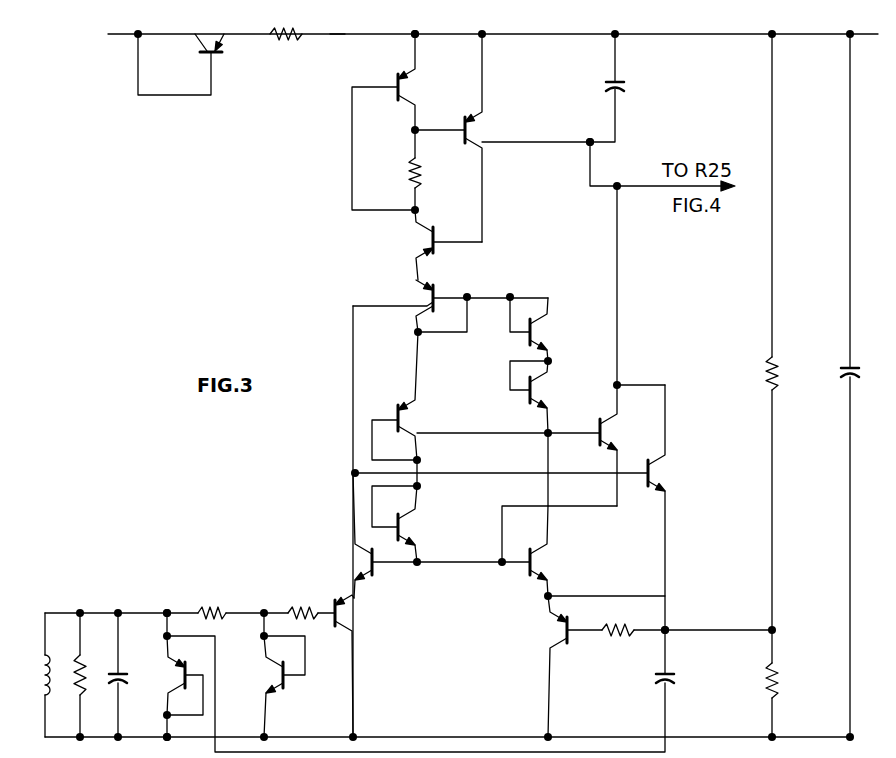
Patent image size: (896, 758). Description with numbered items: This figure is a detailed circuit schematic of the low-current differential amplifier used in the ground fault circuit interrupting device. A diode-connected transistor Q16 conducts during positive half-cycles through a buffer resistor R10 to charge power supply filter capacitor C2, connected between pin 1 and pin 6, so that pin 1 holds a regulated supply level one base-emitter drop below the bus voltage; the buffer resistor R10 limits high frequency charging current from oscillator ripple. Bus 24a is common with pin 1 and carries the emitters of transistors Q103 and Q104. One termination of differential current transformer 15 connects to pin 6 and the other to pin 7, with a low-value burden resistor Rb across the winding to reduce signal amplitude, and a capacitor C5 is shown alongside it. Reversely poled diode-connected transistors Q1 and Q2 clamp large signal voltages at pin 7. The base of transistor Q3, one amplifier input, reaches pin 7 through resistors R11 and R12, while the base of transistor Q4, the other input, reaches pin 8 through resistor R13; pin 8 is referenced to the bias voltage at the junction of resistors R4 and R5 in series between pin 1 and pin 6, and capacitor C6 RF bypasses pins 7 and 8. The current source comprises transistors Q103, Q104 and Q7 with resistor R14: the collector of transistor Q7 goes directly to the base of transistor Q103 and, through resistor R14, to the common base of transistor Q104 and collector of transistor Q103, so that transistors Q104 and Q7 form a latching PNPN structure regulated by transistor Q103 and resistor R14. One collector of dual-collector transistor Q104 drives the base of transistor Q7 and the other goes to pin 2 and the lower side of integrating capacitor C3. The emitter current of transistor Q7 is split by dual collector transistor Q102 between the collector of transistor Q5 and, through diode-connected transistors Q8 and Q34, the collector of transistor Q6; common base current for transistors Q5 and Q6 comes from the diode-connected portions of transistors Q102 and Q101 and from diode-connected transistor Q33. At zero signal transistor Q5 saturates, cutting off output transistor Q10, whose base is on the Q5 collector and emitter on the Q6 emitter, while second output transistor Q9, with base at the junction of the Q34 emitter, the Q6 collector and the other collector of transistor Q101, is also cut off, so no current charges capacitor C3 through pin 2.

The bus 24a is at (335, 34).
The pin 1 is at (417, 23).
The pin 2 is at (590, 132).
The pin 6 is at (168, 745).
The pin 7 is at (168, 603).
The pin 8 is at (665, 619).
The differential current transformer 15 is at (40, 654).
The burden resistor Rb is at (72, 665).
The capacitor C5 is at (110, 686).
The capacitor C6 is at (656, 683).
The power supply filter capacitor C2 is at (858, 364).
The integrating capacitor C3 is at (625, 88).
The resistor R4 is at (764, 366).
The resistor R5 is at (765, 682).
The buffer resistor R10 is at (289, 44).
The resistor R11 is at (208, 600).
The resistor R12 is at (300, 602).
The resistor R13 is at (609, 648).
The resistor R14 is at (422, 176).
The diode-connected transistor Q1 is at (172, 668).
The diode-connected transistor Q2 is at (272, 672).
The transistor Q3 is at (352, 617).
The transistor Q4 is at (556, 632).
The transistor Q5 is at (362, 548).
The transistor Q6 is at (545, 557).
The transistor Q7 is at (415, 237).
The diode-connected transistor Q8 is at (545, 327).
The second output transistor Q9 is at (612, 422).
The output transistor Q10 is at (665, 473).
The diode-connected transistor Q16 is at (218, 55).
The diode-connected transistor Q33 is at (417, 523).
The diode-connected transistor Q34 is at (545, 390).
The dual collector transistor Q101 is at (412, 417).
The dual collector transistor Q102 is at (423, 292).
The transistor Q103 is at (410, 82).
The dual-collector transistor Q104 is at (478, 128).